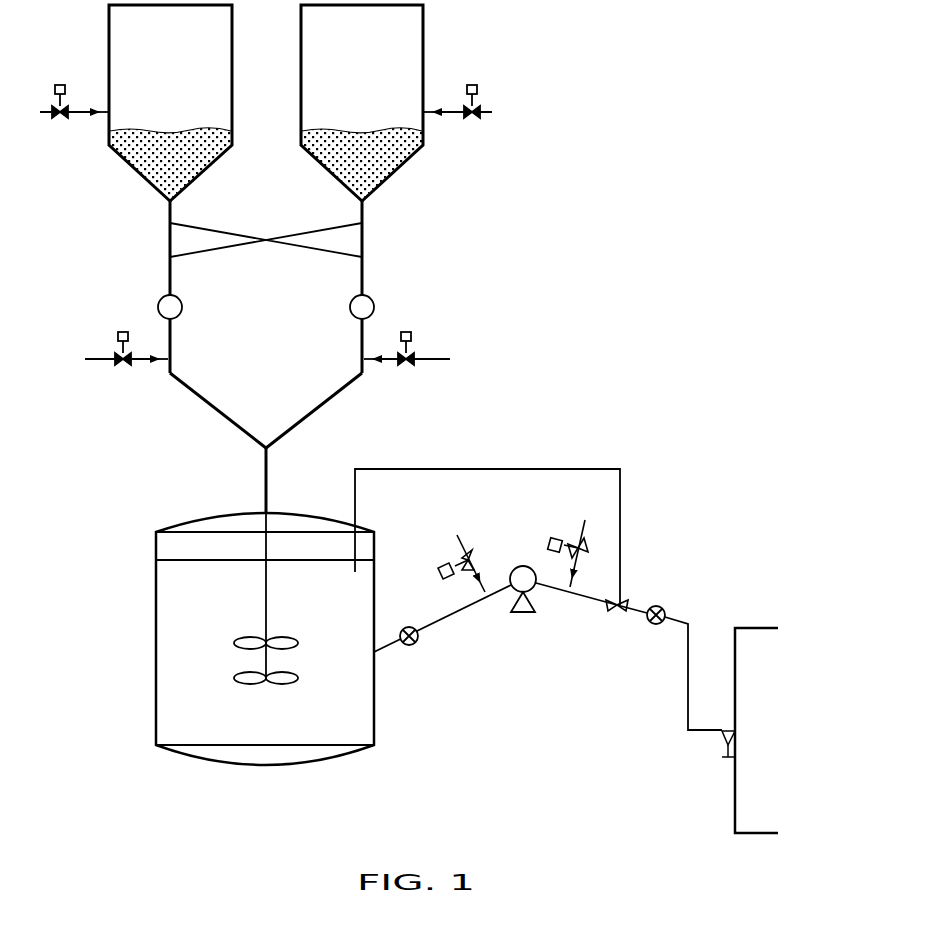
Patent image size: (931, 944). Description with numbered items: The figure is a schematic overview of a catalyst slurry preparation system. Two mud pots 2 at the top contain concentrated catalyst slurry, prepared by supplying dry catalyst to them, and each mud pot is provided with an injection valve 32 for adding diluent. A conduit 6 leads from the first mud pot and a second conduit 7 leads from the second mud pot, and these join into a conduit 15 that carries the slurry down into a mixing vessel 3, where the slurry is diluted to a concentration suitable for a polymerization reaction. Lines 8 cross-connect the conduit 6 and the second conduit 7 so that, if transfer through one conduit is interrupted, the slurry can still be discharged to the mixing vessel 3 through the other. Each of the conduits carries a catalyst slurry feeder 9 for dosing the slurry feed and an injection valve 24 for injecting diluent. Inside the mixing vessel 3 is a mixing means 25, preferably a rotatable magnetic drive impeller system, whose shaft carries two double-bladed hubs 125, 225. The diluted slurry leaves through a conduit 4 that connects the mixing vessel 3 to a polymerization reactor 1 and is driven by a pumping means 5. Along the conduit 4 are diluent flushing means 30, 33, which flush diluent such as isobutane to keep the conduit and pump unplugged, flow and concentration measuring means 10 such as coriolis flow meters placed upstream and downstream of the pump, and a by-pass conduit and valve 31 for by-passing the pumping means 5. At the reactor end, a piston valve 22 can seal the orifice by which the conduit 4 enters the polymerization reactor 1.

The polymerization reactor 1 is at (770, 724).
The mud pot 2 is at (178, 74).
The mixing vessel 3 is at (207, 602).
The conduit 4 is at (380, 656).
The pumping means 5 is at (523, 613).
The conduit 6 is at (216, 410).
The second conduit 7 is at (314, 410).
The lines 8 is at (236, 253).
The catalyst slurry feeder 9 is at (182, 309).
The flow and concentration measuring means 10 is at (401, 632).
The conduit 15 is at (270, 488).
The piston valve 22 is at (722, 738).
The injection valve 24 is at (95, 362).
The mixing means 25 is at (265, 608).
The diluent flushing means 30 is at (458, 540).
The conduit and valve 31 is at (617, 612).
The injection valve 32 is at (85, 108).
The diluent flushing means 33 is at (587, 526).
The double-bladed hub 125 is at (300, 683).
The double-bladed hub 225 is at (300, 648).